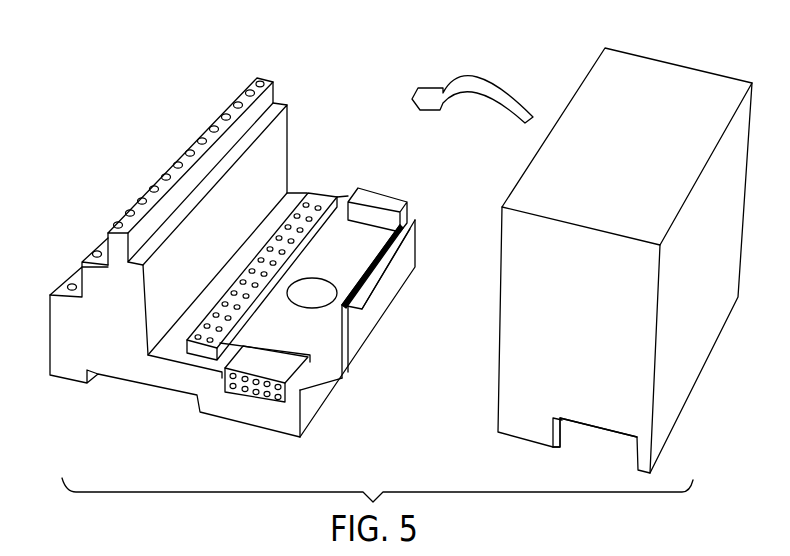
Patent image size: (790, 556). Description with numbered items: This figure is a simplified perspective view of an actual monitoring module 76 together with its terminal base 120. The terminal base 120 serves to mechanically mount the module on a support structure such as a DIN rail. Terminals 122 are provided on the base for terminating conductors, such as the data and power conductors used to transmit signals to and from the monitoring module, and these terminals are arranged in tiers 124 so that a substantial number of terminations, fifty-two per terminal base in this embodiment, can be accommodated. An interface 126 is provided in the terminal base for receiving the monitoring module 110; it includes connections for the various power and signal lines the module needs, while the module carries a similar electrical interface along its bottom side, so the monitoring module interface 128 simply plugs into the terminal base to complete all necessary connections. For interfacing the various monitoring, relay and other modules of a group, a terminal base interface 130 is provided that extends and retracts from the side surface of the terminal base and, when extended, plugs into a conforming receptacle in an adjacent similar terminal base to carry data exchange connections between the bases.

The monitoring module 76 is at (545, 67).
The monitoring module 110 is at (703, 363).
The terminal base 120 is at (246, 426).
The terminals 122 is at (140, 203).
The tiers 124 is at (96, 246).
The interface 126 is at (323, 184).
The monitoring module interface 128 is at (550, 449).
The terminal base interface 130 is at (268, 394).